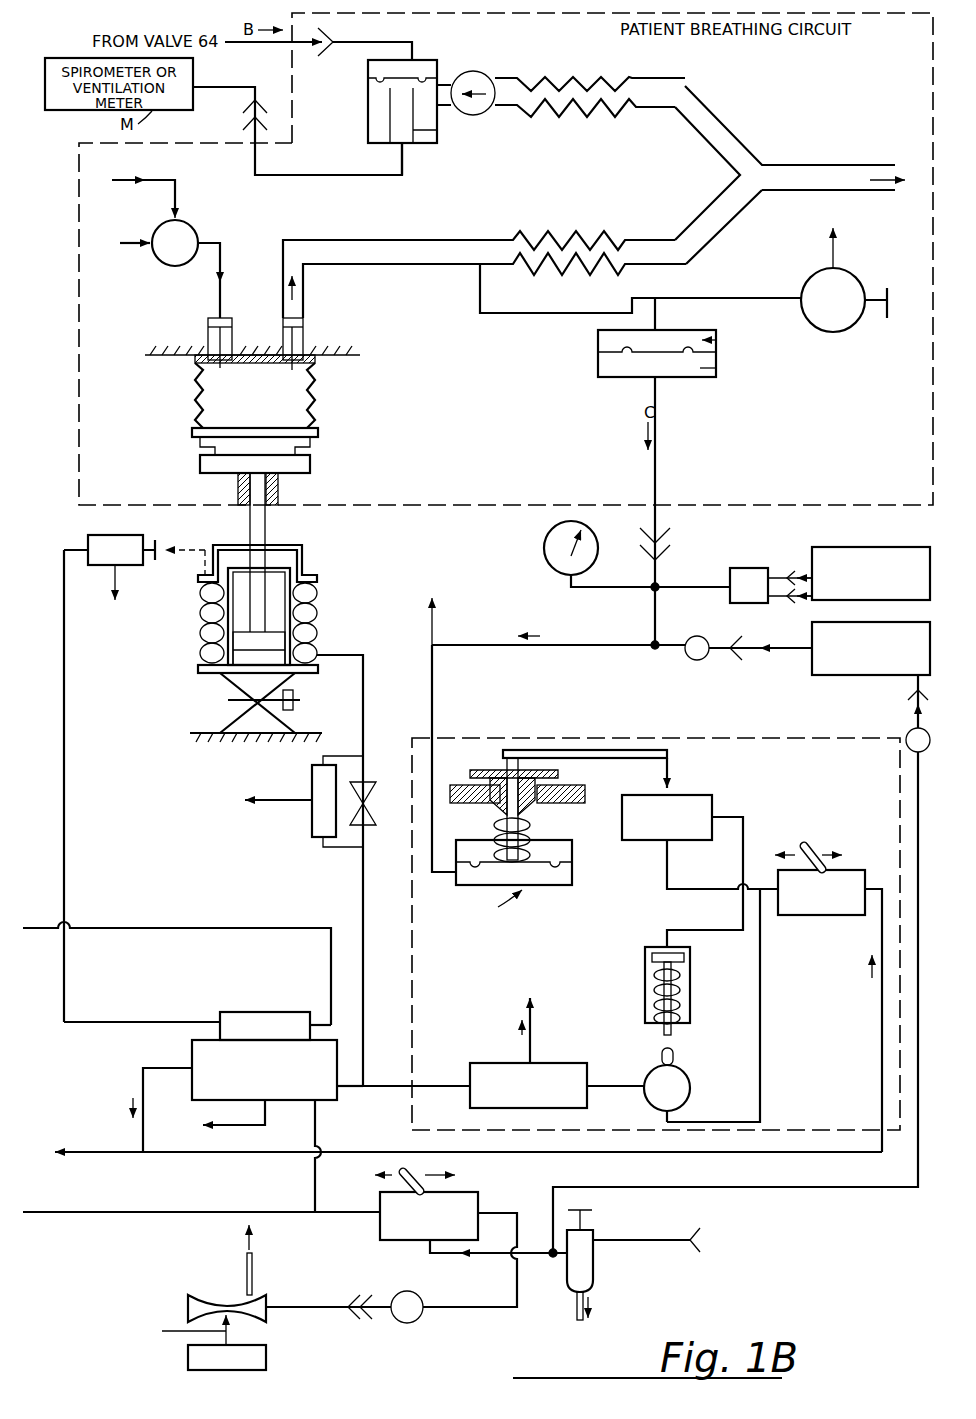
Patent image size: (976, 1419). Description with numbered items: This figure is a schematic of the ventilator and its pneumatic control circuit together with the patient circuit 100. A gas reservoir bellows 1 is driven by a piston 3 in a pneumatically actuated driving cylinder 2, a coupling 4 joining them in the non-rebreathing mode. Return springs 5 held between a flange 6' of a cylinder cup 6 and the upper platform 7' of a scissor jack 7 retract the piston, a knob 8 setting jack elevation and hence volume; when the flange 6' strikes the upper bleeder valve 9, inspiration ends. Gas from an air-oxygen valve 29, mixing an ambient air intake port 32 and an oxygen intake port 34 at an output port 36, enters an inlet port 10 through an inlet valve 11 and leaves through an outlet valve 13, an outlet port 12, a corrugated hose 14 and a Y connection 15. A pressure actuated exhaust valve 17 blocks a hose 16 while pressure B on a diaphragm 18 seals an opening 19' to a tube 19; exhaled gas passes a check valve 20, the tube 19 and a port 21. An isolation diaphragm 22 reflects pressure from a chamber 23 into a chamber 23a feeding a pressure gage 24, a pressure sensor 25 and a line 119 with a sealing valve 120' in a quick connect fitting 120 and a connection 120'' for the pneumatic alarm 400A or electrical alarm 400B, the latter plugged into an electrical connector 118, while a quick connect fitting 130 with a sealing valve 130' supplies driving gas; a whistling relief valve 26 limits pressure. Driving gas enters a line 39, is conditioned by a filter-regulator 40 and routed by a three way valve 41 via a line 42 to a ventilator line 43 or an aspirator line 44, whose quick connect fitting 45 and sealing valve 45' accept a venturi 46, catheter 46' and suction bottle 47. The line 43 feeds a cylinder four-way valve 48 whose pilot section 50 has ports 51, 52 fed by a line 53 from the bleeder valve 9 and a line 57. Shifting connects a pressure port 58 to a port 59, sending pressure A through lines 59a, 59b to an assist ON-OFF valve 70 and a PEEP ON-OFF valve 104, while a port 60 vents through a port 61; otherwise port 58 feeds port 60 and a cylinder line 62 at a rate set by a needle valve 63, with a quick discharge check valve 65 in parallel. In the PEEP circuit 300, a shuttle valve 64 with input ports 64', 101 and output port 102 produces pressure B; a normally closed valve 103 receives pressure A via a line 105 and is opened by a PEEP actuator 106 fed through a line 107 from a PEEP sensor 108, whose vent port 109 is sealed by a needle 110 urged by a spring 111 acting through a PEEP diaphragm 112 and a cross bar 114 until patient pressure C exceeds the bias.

The gas reservoir bellows 1 is at (318, 405).
The driving cylinder 2 is at (300, 600).
The piston 3 is at (268, 525).
The coupling 4 is at (280, 490).
The return springs 5 is at (320, 618).
The cylinder cup 6 is at (276, 563).
The flange 6' is at (336, 579).
The scissor jack 7 is at (251, 707).
The upper platform 7' is at (238, 681).
The knob 8 is at (296, 698).
The upper bleeder valve 9 is at (95, 533).
The inlet port 10 is at (214, 322).
The inlet valve 11 is at (205, 368).
The outlet port 12 is at (300, 322).
The outlet valve 13 is at (296, 368).
The corrugated hose 14 is at (540, 272).
The Y connection 15 is at (760, 183).
The hose 16 is at (583, 82).
The pressure actuated exhaust valve 17 is at (425, 56).
The diaphragm 18 is at (380, 75).
The tube 19 is at (439, 129).
The opening 19' is at (360, 114).
The check valve 20 is at (481, 70).
The port 21 is at (405, 146).
The isolation diaphragm 22 is at (645, 348).
The chamber 23 is at (720, 340).
The chamber 23a is at (718, 370).
The ventilator system pressure gage 24 is at (544, 550).
The pressure sensor 25 is at (748, 566).
The relief valve 26 is at (808, 282).
The air-oxygen valve 29 is at (157, 262).
The ambient air intake port 32 is at (156, 232).
The oxygen intake port 34 is at (178, 214).
The output port 36 is at (200, 236).
The line 39 is at (682, 1238).
The filter-regulator 40 is at (595, 1282).
The three way valve 41 is at (378, 1192).
The line 42 is at (455, 1253).
The ventilator line 43 is at (222, 1212).
The aspirator line 44 is at (482, 1305).
The quick connect fitting 45 is at (328, 1298).
The sealing valve 45' is at (394, 1321).
The venturi 46 is at (175, 1307).
The medical catheter 46' is at (270, 1260).
The suction bottle 47 is at (202, 1370).
The cylinder four-way valve 48 is at (205, 1040).
The pilot section 50 is at (258, 1012).
The port 51 is at (218, 1022).
The port 52 is at (314, 1022).
The line 53 is at (64, 975).
The line 57 is at (190, 928).
The pressure port 58 is at (320, 1104).
The port 59 is at (190, 1070).
The line 59a is at (168, 1160).
The line 59b is at (857, 1020).
The port 60 is at (340, 1090).
The port 61 is at (270, 1103).
The cylinder line 62 is at (363, 655).
The needle valve 63 is at (370, 800).
The shuttle valve 64 is at (534, 1069).
The input port 64' is at (405, 1068).
The quick discharge check valve 65 is at (312, 820).
The assist ON-OFF valve 70 is at (96, 1161).
The patient circuit 100 is at (79, 322).
The input port 101 is at (592, 1085).
The output port 102 is at (533, 1060).
The normally closed valve 103 is at (688, 1074).
The PEEP ON-OFF valve 104 is at (830, 868).
The line 105 is at (762, 960).
The PEEP actuator 106 is at (692, 960).
The line 107 is at (746, 850).
The PEEP sensor 108 is at (712, 797).
The vent port 109 is at (663, 792).
The needle 110 is at (670, 769).
The spring 111 is at (505, 828).
The PEEP diaphragm 112 is at (555, 870).
The cross bar 114 is at (503, 752).
The electrical connector 118 is at (798, 575).
The line 119 is at (698, 660).
The pneumatic alarm line 120 is at (760, 665).
The sealing valve 120' is at (571, 633).
The pressure switch line 120'' is at (696, 559).
The quick connect fitting 130 is at (888, 702).
The sealing valve 130' is at (741, 990).
The PEEP circuit 300 is at (795, 738).
The pneumatic alarm 400A is at (880, 676).
The electrical alarm 400B is at (870, 546).